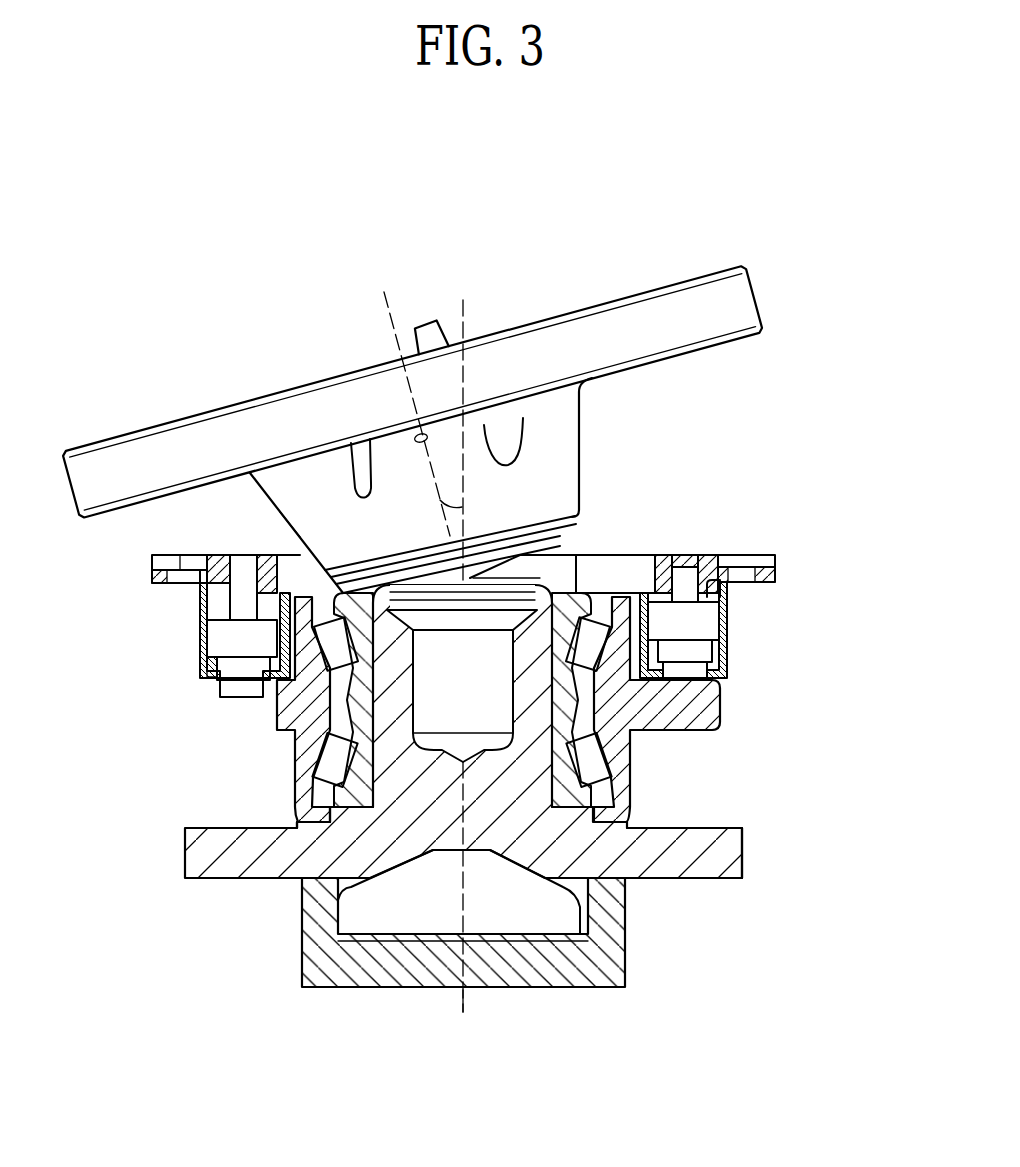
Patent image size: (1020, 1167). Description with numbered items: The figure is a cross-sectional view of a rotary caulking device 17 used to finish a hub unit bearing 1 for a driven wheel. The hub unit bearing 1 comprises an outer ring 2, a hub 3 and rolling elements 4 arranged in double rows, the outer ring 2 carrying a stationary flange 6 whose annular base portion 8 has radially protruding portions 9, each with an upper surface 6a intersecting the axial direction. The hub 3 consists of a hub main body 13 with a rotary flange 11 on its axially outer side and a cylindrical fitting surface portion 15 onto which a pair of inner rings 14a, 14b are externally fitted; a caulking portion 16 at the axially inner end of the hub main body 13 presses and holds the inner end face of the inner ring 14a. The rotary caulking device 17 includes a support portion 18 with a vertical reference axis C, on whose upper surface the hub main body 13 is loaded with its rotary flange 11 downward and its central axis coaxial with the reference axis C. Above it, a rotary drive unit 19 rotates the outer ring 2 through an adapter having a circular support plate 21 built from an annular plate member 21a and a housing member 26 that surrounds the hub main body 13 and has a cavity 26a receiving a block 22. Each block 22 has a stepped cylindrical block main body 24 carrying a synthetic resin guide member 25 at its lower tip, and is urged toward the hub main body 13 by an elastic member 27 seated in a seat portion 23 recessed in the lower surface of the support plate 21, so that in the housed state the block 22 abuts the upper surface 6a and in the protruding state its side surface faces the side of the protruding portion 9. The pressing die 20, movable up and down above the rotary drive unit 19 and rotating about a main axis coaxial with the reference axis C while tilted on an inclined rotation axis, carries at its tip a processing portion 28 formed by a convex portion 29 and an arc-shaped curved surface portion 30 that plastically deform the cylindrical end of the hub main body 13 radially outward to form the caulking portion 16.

The hub unit bearing 1 is at (715, 904).
The outer ring 2 is at (300, 782).
The hub 3 is at (668, 900).
The rolling elements 4 is at (590, 645).
The stationary flange 6 is at (705, 713).
The upper surface 6a is at (682, 686).
The base portion 8 is at (288, 723).
The protruding portion 9 is at (708, 728).
The rotary flange 11 is at (732, 862).
The hub main body 13 is at (390, 846).
The inner ring 14a is at (335, 585).
The inner ring 14b is at (303, 812).
The fitting surface portion 15 is at (357, 797).
The caulking portion 16 is at (602, 566).
The rotary caulking device 17 is at (721, 233).
The support portion 18 is at (604, 975).
The rotary drive unit 19 is at (790, 563).
The pressing die 20 is at (167, 447).
The support plate 21 is at (708, 587).
The plate member 21a is at (227, 556).
The block 22 is at (217, 643).
The seat portion 23 is at (198, 574).
The block main body 24 is at (223, 654).
The guide member 25 is at (243, 691).
The housing member 26 is at (728, 661).
The cavity 26a is at (713, 586).
The elastic member 27 is at (260, 560).
The processing portion 28 is at (538, 546).
The convex portion 29 is at (484, 550).
The curved surface portion 30 is at (547, 550).
The reference axis C is at (465, 1014).